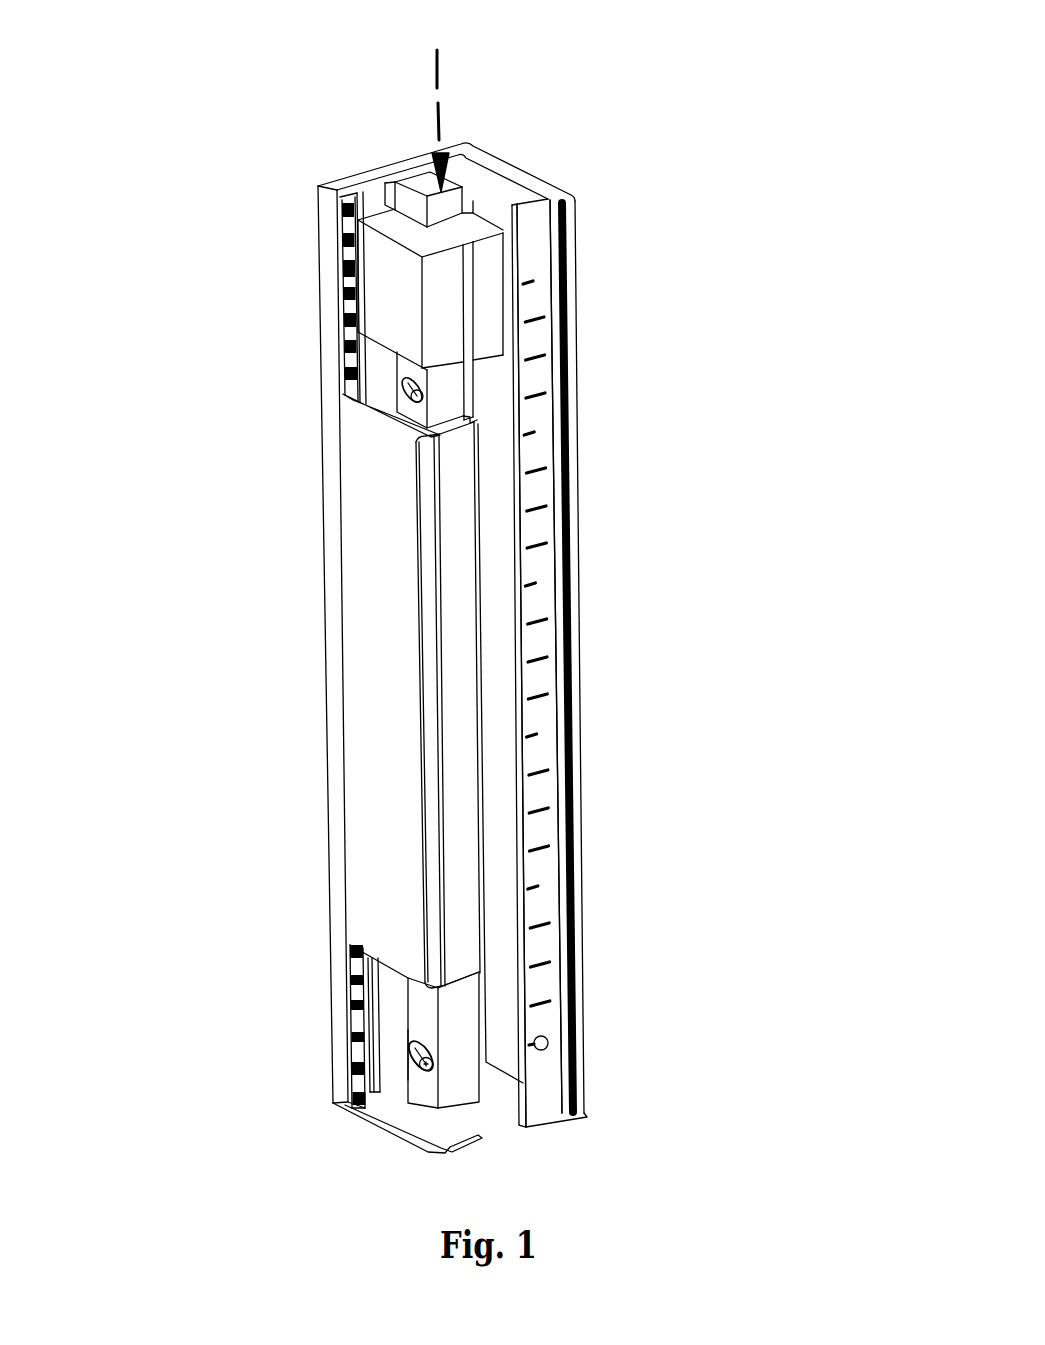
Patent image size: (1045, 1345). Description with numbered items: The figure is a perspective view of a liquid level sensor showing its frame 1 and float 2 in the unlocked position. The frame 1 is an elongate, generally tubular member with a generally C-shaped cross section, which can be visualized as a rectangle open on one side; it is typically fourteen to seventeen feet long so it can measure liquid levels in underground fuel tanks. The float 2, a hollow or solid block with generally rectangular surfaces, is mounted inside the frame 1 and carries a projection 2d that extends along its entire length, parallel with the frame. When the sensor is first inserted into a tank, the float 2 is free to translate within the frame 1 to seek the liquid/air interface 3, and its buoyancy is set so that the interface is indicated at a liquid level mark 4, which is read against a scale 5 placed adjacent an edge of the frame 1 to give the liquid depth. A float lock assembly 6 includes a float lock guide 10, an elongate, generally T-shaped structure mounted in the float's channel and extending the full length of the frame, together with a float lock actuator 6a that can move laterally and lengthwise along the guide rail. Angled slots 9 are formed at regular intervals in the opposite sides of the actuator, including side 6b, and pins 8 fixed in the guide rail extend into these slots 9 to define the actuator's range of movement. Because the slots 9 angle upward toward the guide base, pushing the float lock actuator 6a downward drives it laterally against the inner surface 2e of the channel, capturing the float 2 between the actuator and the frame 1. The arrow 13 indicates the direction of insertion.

The frame 1 is at (378, 634).
The float 2 is at (488, 215).
The projection 2d is at (490, 329).
The inner surface of the channel 2e is at (450, 222).
The liquid/air interface 3 is at (47, 422).
The liquid level mark 4 is at (467, 305).
The scale 5 is at (548, 557).
The float lock assembly 6 is at (408, 203).
The float lock actuator 6a is at (457, 1029).
The side of the float lock actuator 6b is at (423, 1018).
The pins 8 is at (415, 1060).
The angled slots 9 is at (413, 1036).
The float lock guide 10 is at (422, 178).
The insertion direction arrow 13 is at (437, 97).